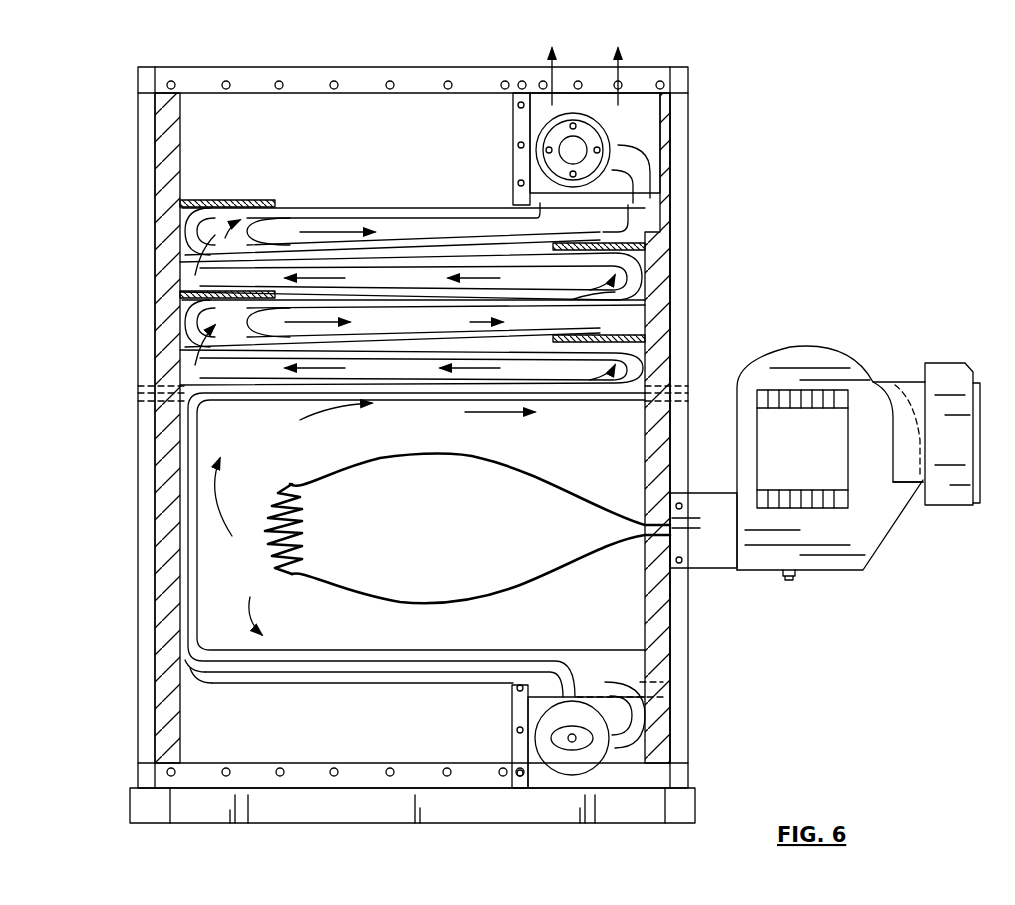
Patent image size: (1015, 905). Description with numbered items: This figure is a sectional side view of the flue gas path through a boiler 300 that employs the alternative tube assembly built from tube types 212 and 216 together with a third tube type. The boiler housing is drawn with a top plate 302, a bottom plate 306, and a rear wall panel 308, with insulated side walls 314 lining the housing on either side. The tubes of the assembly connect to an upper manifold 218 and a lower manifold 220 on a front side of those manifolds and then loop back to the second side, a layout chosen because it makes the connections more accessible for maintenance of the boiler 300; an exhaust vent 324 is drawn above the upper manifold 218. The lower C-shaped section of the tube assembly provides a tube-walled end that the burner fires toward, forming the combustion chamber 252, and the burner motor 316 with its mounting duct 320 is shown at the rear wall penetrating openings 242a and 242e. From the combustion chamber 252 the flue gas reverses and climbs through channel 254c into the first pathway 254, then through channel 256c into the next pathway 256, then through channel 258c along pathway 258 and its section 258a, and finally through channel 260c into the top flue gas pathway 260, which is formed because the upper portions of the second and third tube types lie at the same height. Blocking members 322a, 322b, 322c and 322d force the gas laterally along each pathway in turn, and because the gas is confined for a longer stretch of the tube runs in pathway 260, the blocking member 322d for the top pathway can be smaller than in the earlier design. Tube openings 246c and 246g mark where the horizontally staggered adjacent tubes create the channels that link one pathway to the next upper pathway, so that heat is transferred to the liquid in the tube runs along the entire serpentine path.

The boiler 300 is at (729, 122).
The top plate 302 is at (212, 73).
The bottom plate 306 is at (143, 778).
The side wall panel 308 is at (680, 365).
The insulated side walls 314 is at (172, 718).
The upper manifold 218 is at (612, 130).
The exhaust vent 324 is at (568, 72).
The baffle 322a is at (655, 338).
The baffle 322b is at (185, 312).
The baffle 322c is at (657, 220).
The blocking member 322d is at (212, 200).
The flue gas pathway 260 is at (413, 229).
The fourth pass inlet 260c is at (235, 216).
The third heat exchange pass 258 is at (411, 276).
The third pass section 258a is at (518, 323).
The third pass turn 258c is at (630, 275).
The second heat exchange pass 256 is at (413, 323).
The second pass turn 256c is at (232, 327).
The first heat exchange pass 254 is at (411, 367).
The first pass turn 254c is at (595, 375).
The combustion chamber 252 is at (429, 545).
The tube opening 246g is at (185, 272).
The tube opening 246c is at (190, 330).
The end wall opening 242e is at (648, 283).
The end wall opening 242a is at (643, 380).
The tube type 212 is at (332, 678).
The tube type 216 is at (435, 660).
The lower manifold 220 is at (593, 763).
The burner mounting duct 320 is at (673, 527).
The burner motor 316 is at (862, 346).